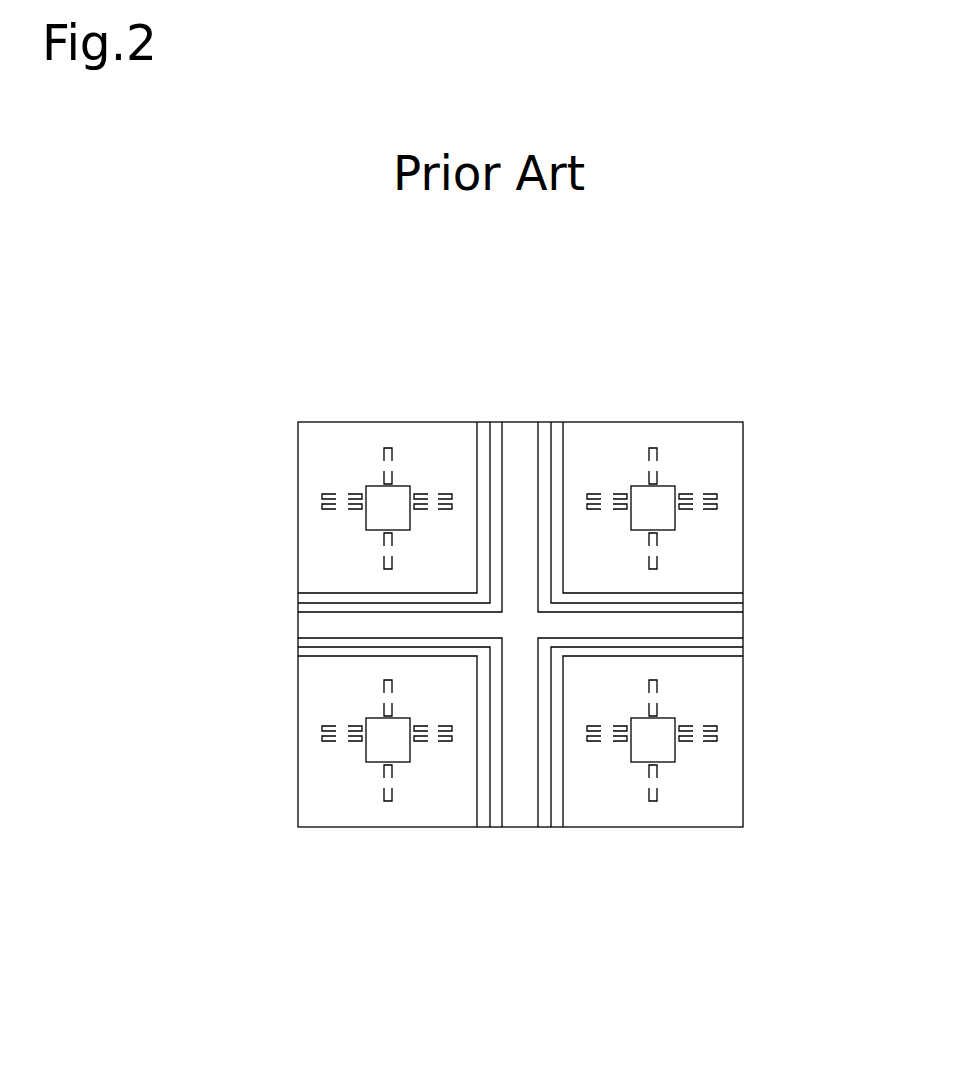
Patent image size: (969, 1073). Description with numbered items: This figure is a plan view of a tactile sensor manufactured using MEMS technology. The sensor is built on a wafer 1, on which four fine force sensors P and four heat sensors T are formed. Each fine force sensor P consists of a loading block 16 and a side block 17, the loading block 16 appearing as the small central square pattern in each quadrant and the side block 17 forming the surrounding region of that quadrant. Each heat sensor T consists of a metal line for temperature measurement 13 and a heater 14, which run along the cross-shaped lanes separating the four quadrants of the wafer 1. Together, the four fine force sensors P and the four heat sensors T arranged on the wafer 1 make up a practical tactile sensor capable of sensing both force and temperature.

The wafer 1 is at (291, 731).
The fine force sensor P is at (321, 464).
The heat sensor T is at (739, 604).
The metal line for temperature measurement 13 is at (489, 781).
The heater 14 is at (503, 820).
The loading block 16 is at (379, 498).
The side block 17 is at (313, 557).